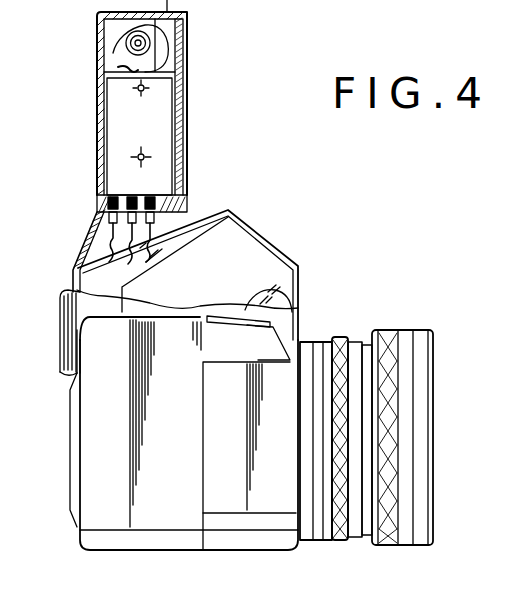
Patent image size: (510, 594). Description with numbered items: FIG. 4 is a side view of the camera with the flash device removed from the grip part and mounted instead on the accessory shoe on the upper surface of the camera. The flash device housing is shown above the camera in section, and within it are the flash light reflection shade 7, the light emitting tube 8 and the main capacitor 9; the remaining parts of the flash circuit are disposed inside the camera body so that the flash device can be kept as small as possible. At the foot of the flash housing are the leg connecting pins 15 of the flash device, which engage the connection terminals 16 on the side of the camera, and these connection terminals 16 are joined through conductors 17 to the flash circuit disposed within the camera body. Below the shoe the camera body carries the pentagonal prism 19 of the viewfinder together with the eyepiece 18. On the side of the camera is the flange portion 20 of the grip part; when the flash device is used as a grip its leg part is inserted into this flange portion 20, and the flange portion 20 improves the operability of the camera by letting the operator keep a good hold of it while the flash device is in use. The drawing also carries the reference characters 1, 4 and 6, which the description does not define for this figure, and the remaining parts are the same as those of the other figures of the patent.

The camera body 1 is at (92, 410).
The eyepiece lens 4 is at (285, 298).
The housing of range finder module 6 is at (184, 65).
The flash light reflection shade 7 is at (165, 50).
The light emitting tube 8 is at (125, 38).
The main capacitor 9 is at (112, 117).
The leg connecting pins 15 is at (100, 207).
The connection terminals 16 is at (98, 227).
The conductors 17 is at (104, 246).
The eyepiece 18 is at (67, 288).
The pentagonal prism 19 is at (250, 262).
The flange portion 20 is at (243, 360).